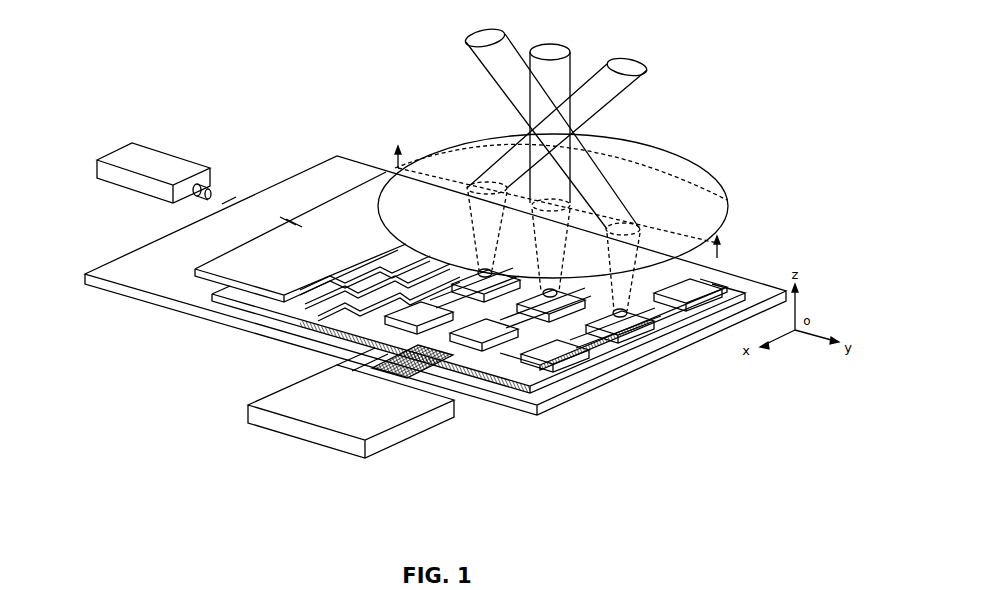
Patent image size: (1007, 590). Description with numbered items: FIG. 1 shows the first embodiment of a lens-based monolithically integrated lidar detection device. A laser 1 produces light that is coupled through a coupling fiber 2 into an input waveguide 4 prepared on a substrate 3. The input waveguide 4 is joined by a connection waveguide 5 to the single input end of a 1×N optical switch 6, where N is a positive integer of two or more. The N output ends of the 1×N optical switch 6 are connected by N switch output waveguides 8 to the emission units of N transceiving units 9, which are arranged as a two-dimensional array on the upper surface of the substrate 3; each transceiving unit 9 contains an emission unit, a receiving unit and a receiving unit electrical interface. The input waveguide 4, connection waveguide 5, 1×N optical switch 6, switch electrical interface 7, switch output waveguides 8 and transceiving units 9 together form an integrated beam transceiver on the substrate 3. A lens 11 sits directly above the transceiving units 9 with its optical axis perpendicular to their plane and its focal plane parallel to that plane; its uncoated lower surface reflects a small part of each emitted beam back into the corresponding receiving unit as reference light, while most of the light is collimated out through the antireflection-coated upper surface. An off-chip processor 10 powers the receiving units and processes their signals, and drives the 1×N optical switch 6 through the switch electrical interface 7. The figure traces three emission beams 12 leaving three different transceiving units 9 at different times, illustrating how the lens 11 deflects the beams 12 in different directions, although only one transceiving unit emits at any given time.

The laser 1 is at (115, 183).
The coupling fiber 2 is at (228, 200).
The substrate 3 is at (137, 270).
The input waveguide 4 is at (287, 220).
The connection waveguide 5 is at (293, 222).
The 1×N optical switch 6 is at (313, 225).
The switch electrical interface 7 is at (235, 288).
The switch output waveguides 8 is at (337, 315).
The transceiving units 9 is at (597, 362).
The off-chip processor 10 is at (395, 438).
The lens 11 is at (443, 145).
The emission beams 12 is at (597, 100).